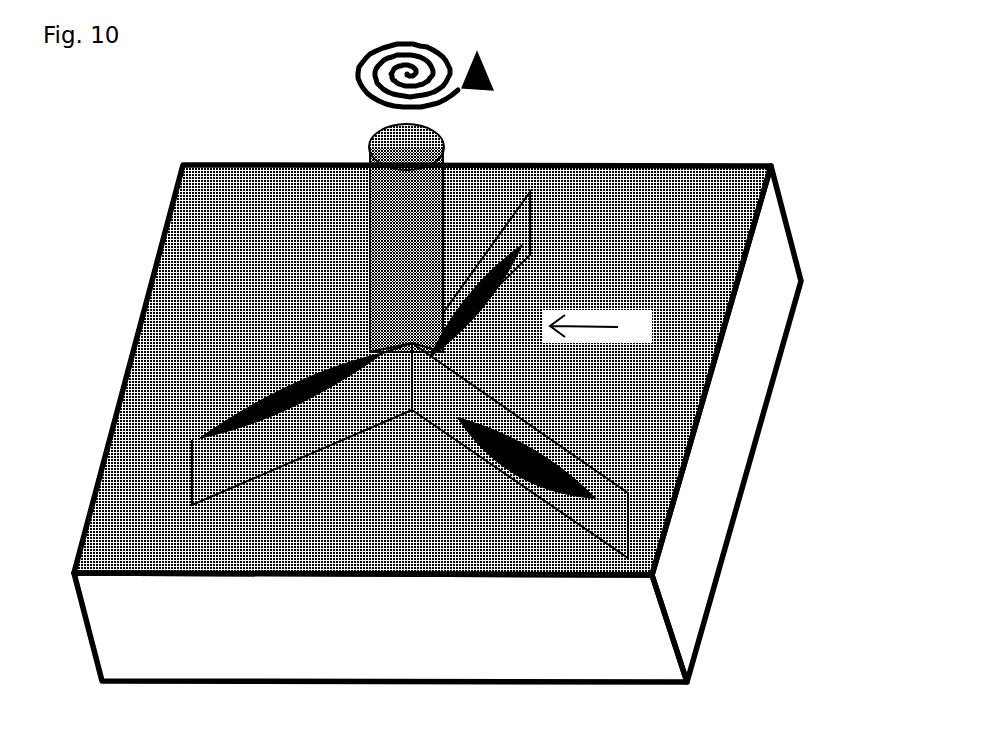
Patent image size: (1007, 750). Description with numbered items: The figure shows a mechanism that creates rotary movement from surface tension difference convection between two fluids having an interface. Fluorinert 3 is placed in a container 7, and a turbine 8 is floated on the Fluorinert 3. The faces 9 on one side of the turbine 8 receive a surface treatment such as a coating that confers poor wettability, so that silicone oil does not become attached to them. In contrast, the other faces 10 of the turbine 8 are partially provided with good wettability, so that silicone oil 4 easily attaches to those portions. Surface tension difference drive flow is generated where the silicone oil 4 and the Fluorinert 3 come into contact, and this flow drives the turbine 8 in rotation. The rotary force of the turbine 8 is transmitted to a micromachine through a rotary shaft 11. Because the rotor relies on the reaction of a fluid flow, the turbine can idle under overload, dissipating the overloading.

The Fluorinert 3 is at (207, 245).
The container 7 is at (758, 282).
The rotary shaft 11 is at (410, 190).
The turbine 8 is at (597, 327).
The faces 9 is at (272, 443).
The silicone oil 4 is at (510, 480).
The other faces 10 is at (600, 517).